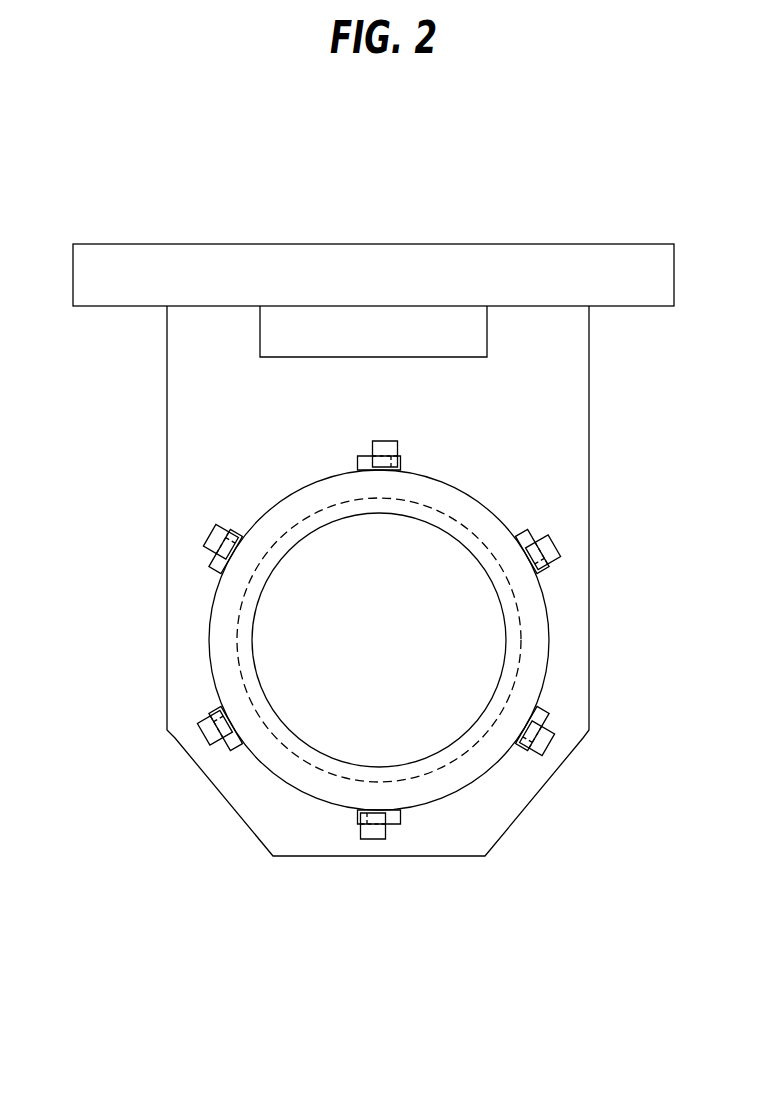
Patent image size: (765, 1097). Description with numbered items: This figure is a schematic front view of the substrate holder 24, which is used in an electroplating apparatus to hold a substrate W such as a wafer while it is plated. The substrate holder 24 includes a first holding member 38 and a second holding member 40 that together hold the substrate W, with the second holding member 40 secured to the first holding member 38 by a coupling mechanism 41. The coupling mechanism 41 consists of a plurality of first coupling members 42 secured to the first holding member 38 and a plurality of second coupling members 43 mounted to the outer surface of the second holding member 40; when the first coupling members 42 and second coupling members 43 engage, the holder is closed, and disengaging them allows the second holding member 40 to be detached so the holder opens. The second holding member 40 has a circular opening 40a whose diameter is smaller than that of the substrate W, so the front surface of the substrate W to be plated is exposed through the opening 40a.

The substrate holder 24 is at (277, 218).
The first holding member 38 is at (167, 608).
The second holding member 40 is at (379, 617).
The opening 40a is at (421, 525).
The coupling mechanism 41 is at (378, 441).
The first coupling member 42 is at (390, 440).
The second coupling member 43 is at (365, 455).
The substrate W is at (521, 635).